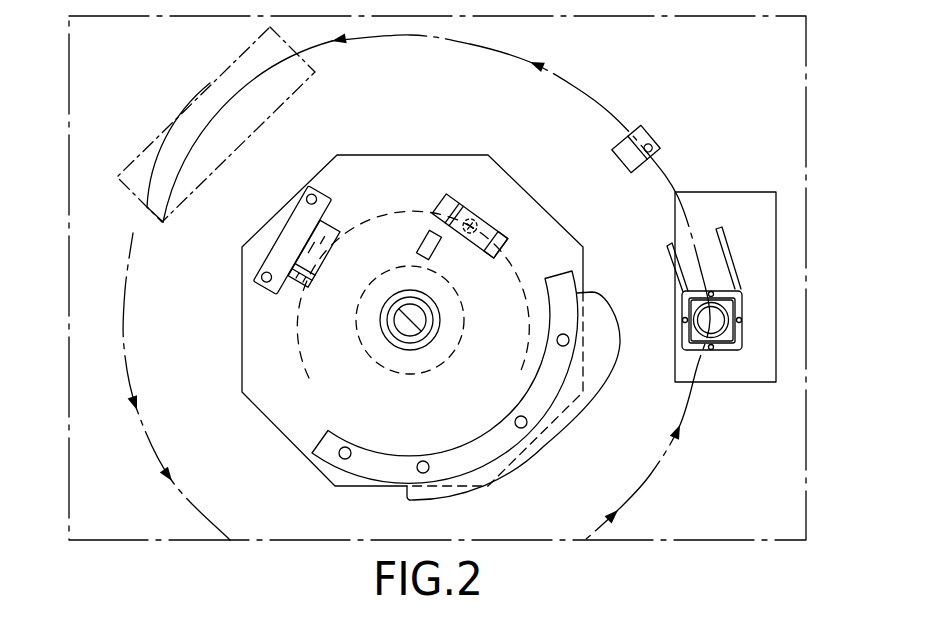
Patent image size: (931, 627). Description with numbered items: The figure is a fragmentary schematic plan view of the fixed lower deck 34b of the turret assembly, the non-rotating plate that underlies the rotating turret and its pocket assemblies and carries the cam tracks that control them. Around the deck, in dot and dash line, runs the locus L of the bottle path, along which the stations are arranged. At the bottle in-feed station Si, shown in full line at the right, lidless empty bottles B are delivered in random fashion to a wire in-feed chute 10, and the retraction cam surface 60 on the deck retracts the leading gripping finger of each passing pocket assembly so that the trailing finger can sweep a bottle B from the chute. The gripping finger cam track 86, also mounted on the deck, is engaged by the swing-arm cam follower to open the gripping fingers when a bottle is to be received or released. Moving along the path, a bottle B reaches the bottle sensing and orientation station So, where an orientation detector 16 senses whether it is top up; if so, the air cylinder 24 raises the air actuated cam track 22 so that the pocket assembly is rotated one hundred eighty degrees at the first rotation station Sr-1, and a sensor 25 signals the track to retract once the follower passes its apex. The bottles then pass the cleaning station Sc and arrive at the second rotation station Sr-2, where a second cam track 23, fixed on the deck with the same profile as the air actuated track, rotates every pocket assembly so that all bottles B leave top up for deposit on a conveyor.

The wire in-feed chute 10 is at (721, 307).
The orientation detector 16 is at (661, 146).
The air actuated cam track 22 is at (489, 269).
The second cam track 23 is at (328, 252).
The air cylinder 24 is at (490, 197).
The sensor 25 is at (419, 247).
The fixed lower deck 34b is at (431, 156).
The retraction cam surface 60 is at (582, 408).
The gripping finger cam track 86 is at (545, 392).
The bottle B is at (722, 346).
The line L is at (396, 203).
The cleaning station Sc is at (224, 124).
The bottle sensing and orientation station So is at (671, 107).
The bottle in-feed station Si is at (736, 352).
The first rotation station Sr-1 is at (511, 236).
The second rotation station Sr-2 is at (266, 271).